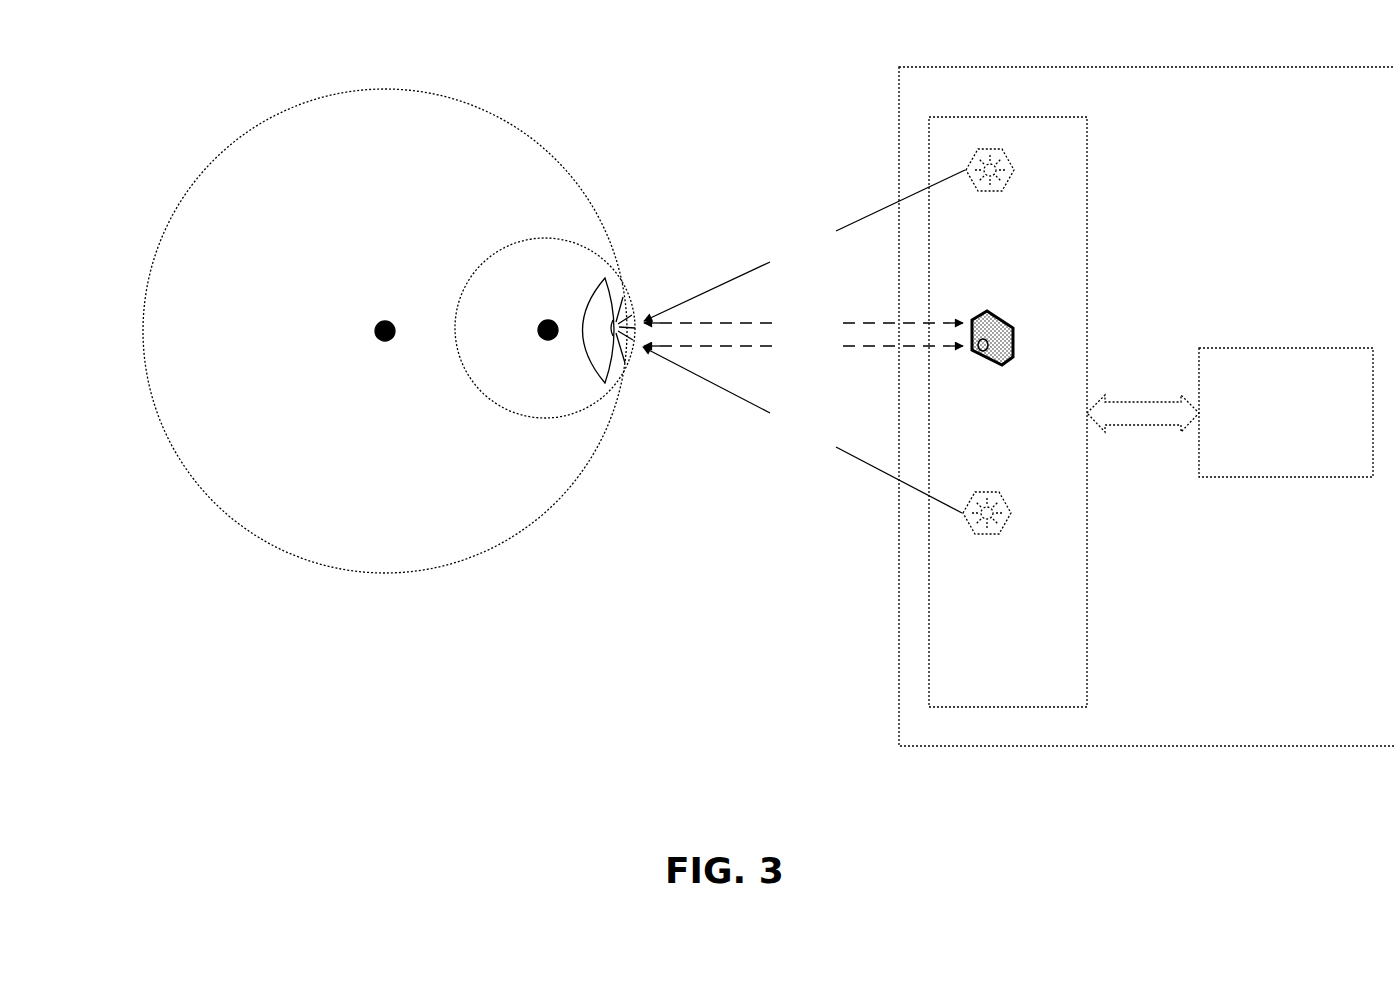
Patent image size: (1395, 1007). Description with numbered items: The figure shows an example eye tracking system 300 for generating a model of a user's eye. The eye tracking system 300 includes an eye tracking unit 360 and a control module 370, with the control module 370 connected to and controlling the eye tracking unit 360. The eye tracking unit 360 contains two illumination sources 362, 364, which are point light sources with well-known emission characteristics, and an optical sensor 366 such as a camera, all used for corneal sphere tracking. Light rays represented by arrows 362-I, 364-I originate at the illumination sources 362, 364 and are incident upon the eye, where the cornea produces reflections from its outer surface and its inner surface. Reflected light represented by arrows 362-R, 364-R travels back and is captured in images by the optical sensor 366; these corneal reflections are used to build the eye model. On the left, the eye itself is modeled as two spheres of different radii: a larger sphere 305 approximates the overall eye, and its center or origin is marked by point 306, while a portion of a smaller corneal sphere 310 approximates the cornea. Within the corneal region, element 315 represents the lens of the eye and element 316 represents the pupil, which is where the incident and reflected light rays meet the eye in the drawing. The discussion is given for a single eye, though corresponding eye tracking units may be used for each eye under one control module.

The eye tracking system 300 is at (1393, 126).
The sphere 305 is at (158, 240).
The point 306 is at (375, 327).
The corneal sphere 310 is at (515, 240).
The lens 315 is at (594, 352).
The pupil 316 is at (620, 346).
The eye tracking unit 360 is at (987, 719).
The illumination source 362 is at (969, 222).
The illumination source 364 is at (966, 564).
The optical sensor 366 is at (977, 402).
The control module 370 is at (1265, 456).
The arrow 362-I is at (804, 245).
The arrow 364-I is at (802, 430).
The arrow 362-R is at (803, 323).
The arrow 364-R is at (803, 346).